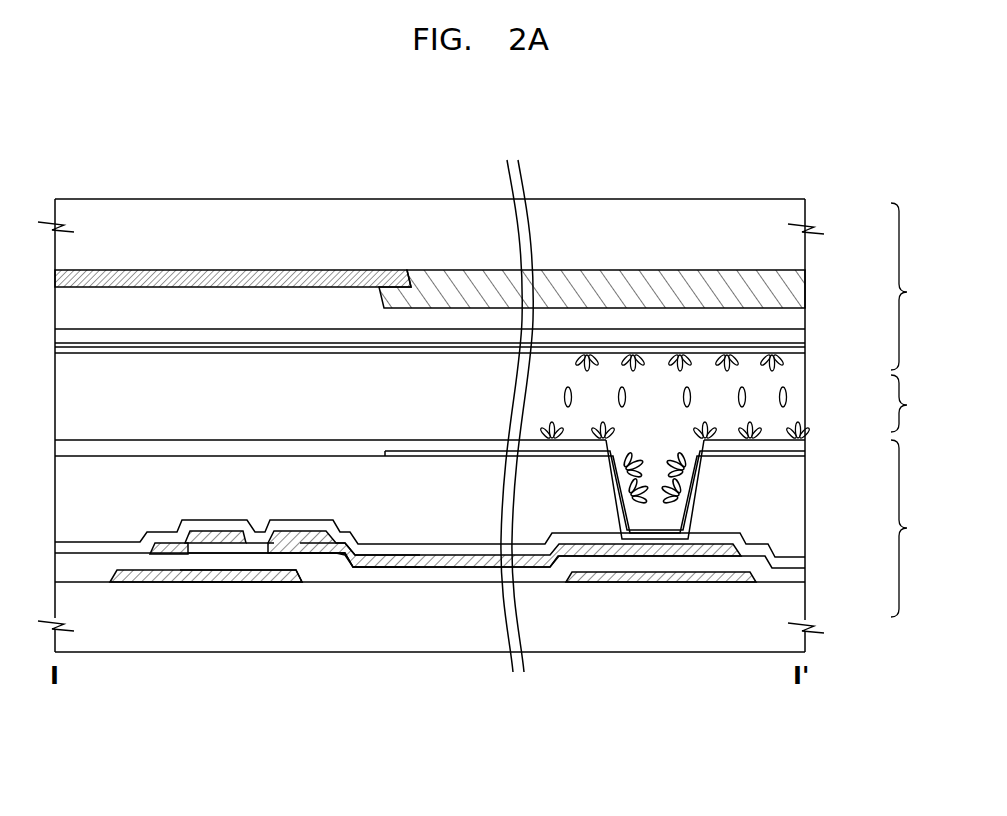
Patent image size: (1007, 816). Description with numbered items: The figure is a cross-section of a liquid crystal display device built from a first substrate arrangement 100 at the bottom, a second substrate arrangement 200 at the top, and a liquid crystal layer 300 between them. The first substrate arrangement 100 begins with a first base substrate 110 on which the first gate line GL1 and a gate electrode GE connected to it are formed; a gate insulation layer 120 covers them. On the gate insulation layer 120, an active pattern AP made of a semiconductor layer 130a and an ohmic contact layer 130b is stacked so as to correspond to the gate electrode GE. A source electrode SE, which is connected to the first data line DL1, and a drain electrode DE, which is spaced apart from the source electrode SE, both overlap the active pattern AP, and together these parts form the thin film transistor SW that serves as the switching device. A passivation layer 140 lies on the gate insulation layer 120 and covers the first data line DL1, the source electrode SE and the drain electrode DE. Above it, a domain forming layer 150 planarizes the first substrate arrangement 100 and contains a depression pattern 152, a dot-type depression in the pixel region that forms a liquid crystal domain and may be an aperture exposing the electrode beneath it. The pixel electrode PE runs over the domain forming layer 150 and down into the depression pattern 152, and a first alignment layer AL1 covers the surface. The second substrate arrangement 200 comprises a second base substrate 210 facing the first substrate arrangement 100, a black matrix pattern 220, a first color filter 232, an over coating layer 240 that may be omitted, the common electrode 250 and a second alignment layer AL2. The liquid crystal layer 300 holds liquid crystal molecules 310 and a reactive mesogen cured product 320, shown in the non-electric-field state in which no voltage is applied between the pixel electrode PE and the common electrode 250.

The second base substrate 210 is at (795, 250).
The black matrix pattern 220 is at (262, 270).
The first color filter 232 is at (458, 275).
The over coating layer 240 is at (795, 321).
The common electrode 250 is at (795, 336).
The second alignment layer AL2 is at (795, 350).
The reactive mesogen cured product 320 is at (738, 362).
The liquid crystal molecules 310 is at (788, 397).
The first alignment layer AL1 is at (803, 439).
The pixel electrode PE is at (796, 448).
The depression pattern 152 is at (652, 517).
The domain forming layer 150 is at (793, 519).
The passivation layer 140 is at (793, 563).
The gate insulation layer 120 is at (793, 578).
The first base substrate 110 is at (793, 593).
The second substrate arrangement 200 is at (921, 286).
The liquid crystal layer 300 is at (921, 403).
The first substrate arrangement 100 is at (921, 528).
The first gate line GL1 is at (122, 574).
The first data line DL1 is at (165, 555).
The source electrode SE is at (198, 545).
The gate electrode GE is at (237, 583).
The drain electrode DE is at (285, 545).
The semiconductor layer 130a is at (320, 561).
The ohmic contact layer 130b is at (341, 557).
The active pattern AP is at (393, 710).
The thin film transistor SW is at (362, 757).